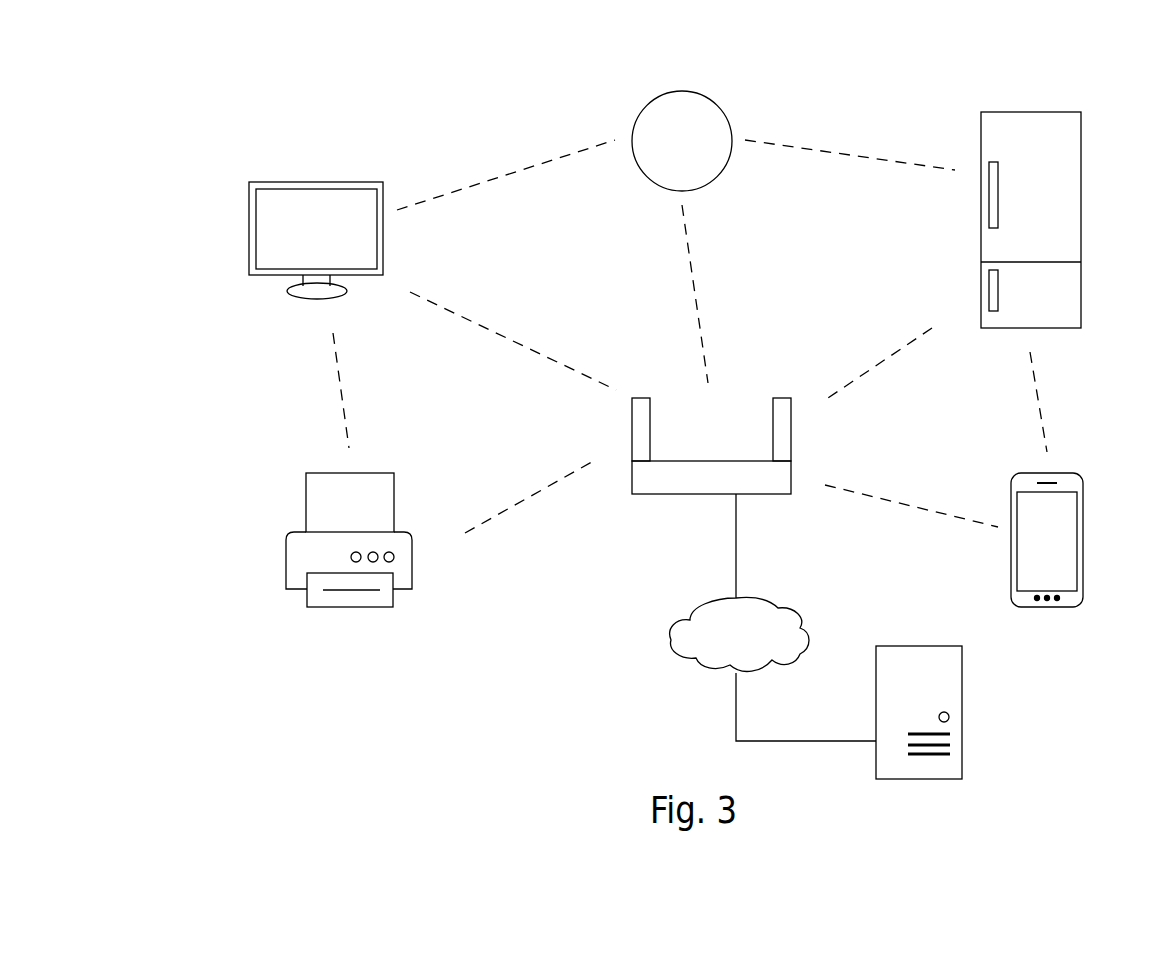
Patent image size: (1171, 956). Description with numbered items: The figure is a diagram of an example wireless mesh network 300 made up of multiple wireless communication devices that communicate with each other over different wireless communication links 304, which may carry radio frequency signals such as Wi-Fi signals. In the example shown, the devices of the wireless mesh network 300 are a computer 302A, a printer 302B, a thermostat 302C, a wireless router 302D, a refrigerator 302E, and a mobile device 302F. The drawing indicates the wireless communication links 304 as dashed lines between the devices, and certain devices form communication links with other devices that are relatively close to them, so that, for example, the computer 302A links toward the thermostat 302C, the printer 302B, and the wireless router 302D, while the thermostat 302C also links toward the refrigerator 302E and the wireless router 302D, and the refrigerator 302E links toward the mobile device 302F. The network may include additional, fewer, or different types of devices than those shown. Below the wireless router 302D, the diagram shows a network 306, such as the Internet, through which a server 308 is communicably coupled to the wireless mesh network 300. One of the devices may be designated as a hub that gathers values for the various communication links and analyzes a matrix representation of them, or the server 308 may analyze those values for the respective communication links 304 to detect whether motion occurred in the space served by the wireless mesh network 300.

The wireless mesh network 300 is at (292, 80).
The computer 302A is at (249, 218).
The printer 302B is at (286, 563).
The thermostat 302C is at (648, 103).
The wireless router 302D is at (652, 496).
The refrigerator 302E is at (1081, 170).
The mobile device 302F is at (1083, 518).
The wireless communication links 304 is at (668, 262).
The network 306 is at (669, 643).
The server 308 is at (915, 646).